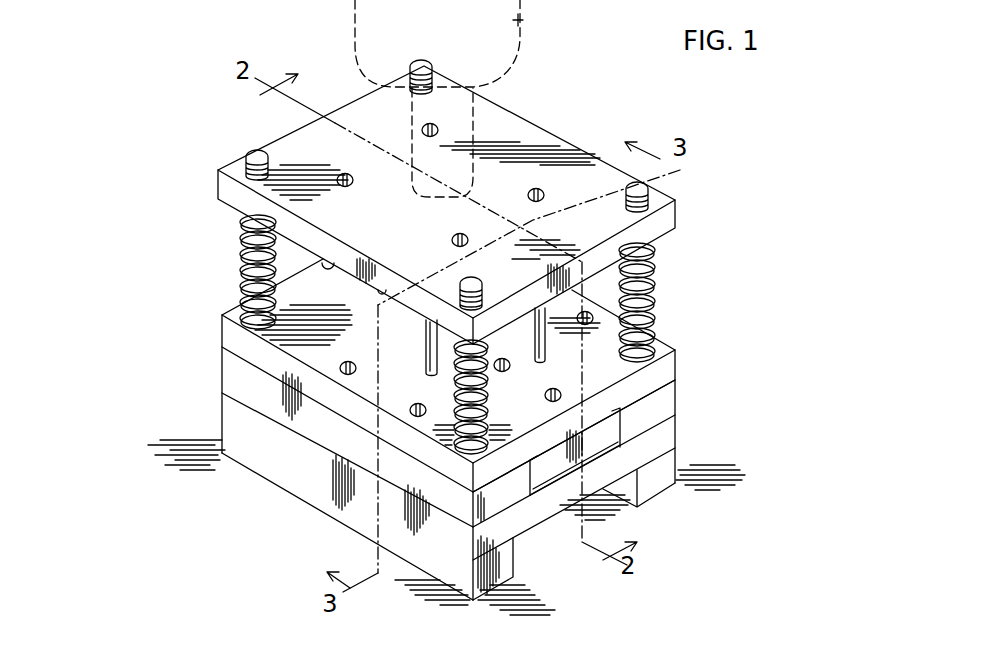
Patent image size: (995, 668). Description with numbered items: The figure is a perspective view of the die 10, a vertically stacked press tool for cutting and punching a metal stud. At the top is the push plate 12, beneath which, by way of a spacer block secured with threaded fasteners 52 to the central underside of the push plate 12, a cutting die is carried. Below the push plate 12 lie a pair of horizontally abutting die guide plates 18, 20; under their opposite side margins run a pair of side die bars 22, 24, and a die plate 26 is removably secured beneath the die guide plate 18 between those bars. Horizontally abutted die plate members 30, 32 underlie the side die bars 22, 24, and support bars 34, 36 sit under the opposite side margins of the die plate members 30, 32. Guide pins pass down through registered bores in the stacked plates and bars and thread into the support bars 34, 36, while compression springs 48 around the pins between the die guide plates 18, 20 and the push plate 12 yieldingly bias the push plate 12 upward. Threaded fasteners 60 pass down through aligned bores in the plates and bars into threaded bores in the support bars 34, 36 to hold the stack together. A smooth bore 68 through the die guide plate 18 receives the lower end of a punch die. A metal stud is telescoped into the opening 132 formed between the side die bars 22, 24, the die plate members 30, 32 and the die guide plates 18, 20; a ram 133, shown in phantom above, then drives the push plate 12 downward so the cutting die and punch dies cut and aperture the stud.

The die 10 is at (700, 261).
The top push plate 12 is at (526, 140).
The die guide plate 18 is at (606, 340).
The die guide plate 20 is at (265, 357).
The side die bar 22 is at (667, 400).
The side die bar 24 is at (265, 403).
The die plate 26 is at (603, 446).
The die plate member 30 is at (668, 438).
The die plate member 32 is at (290, 447).
The support bar 34 is at (650, 493).
The support bar 36 is at (492, 578).
The compression springs 48 is at (240, 248).
The threaded fasteners 52 is at (423, 129).
The threaded fasteners 60 is at (413, 405).
The smooth bore 68 is at (540, 362).
The stud cross-section shaped opening 132 is at (548, 490).
The ram 133 is at (526, 19).